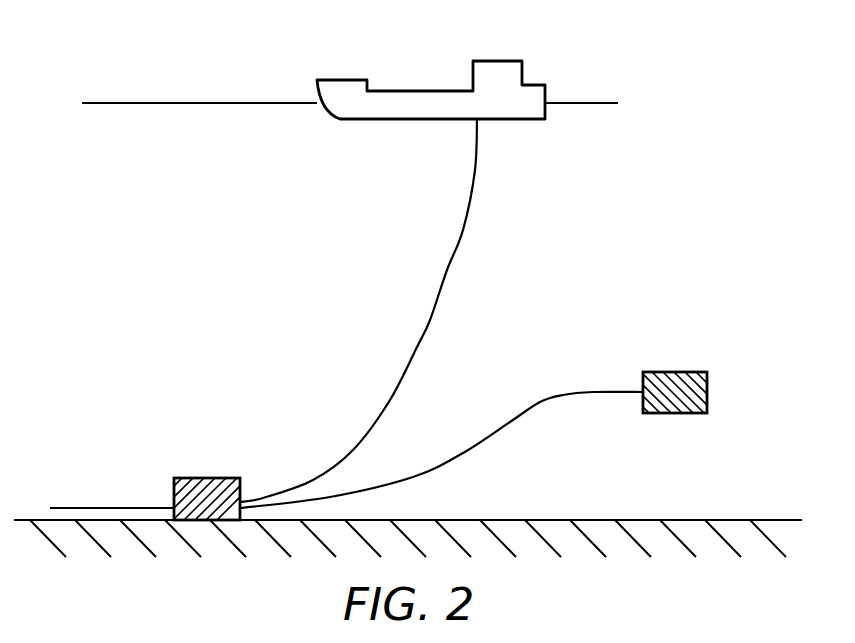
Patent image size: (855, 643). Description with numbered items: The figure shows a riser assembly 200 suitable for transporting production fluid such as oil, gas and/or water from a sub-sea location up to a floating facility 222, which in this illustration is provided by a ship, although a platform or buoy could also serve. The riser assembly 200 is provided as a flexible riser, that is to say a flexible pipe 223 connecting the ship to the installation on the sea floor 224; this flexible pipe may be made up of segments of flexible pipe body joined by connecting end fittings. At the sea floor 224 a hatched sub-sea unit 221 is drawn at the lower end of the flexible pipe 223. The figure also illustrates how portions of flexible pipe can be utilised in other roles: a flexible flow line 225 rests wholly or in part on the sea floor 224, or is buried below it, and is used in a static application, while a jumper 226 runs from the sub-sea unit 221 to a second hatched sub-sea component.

The riser assembly 200 is at (240, 300).
The subsea unit 221 is at (203, 478).
The floating facility 222 is at (340, 80).
The flexible pipe 223 is at (418, 343).
The sea floor 224 is at (750, 520).
The flexible flow line 225 is at (95, 508).
The jumper 226 is at (558, 395).